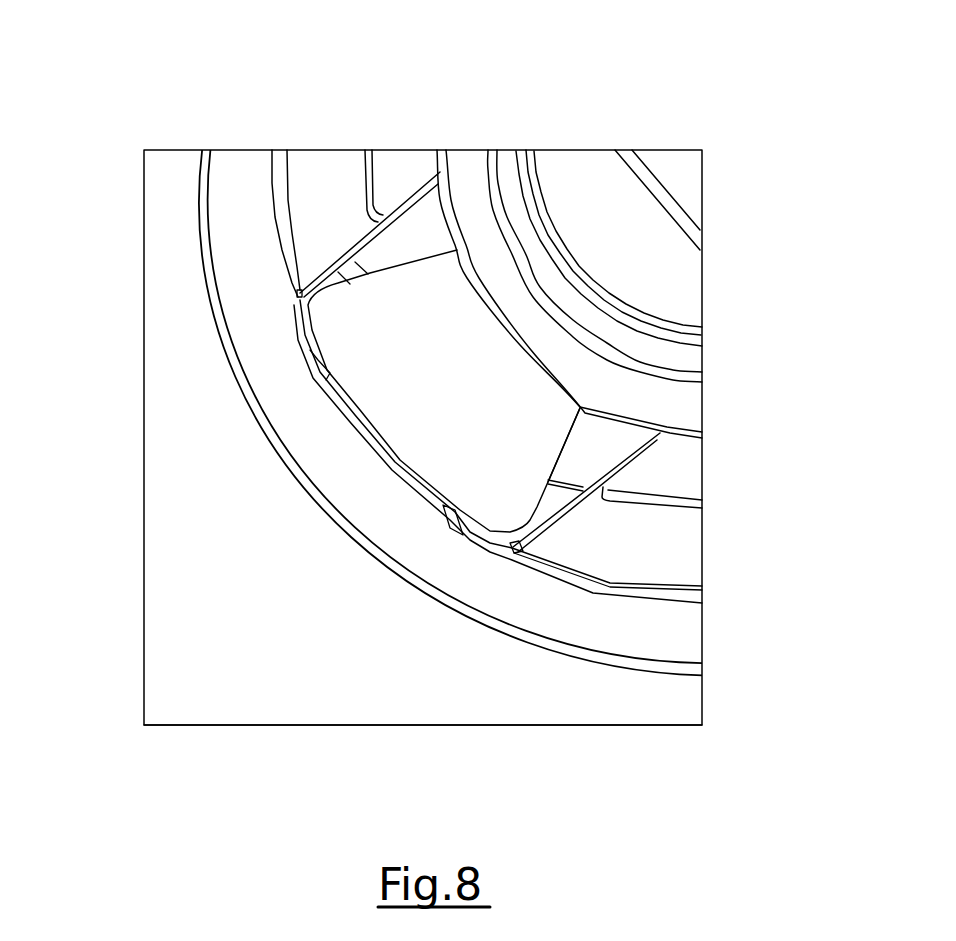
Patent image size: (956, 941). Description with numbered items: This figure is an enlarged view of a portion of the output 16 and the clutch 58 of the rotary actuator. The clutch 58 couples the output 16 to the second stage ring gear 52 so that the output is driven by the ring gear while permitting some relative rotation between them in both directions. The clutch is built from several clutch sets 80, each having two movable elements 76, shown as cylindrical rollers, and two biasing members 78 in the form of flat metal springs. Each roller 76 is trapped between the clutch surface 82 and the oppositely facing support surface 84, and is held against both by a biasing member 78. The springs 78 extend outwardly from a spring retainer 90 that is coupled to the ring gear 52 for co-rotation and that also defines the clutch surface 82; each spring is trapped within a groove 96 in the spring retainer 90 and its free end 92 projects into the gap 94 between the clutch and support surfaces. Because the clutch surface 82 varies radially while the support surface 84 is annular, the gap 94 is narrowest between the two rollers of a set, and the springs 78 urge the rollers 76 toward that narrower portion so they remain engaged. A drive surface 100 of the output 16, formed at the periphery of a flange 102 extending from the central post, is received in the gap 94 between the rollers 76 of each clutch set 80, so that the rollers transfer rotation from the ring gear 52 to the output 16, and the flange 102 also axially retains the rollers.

The output 16 is at (592, 205).
The second stage ring gear 52 is at (507, 688).
The clutch 58 is at (643, 545).
The movable element 76 is at (305, 330).
The biasing member 78 is at (345, 272).
The clutch set 80 is at (400, 500).
The clutch surface 82 is at (365, 272).
The support surface 84 is at (322, 498).
The spring retainer 90 is at (318, 200).
The free end 92 is at (303, 297).
The gap 94 is at (347, 282).
The groove 96 is at (410, 206).
The drive surface 100 is at (445, 490).
The flange 102 is at (448, 462).